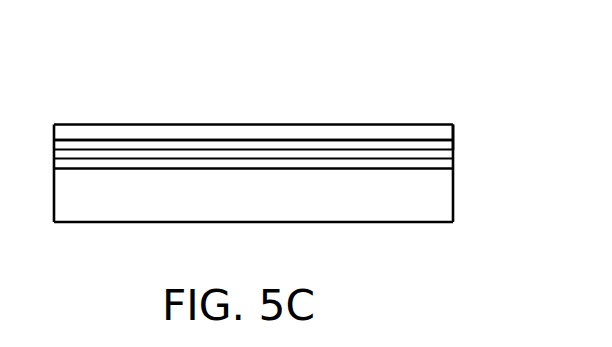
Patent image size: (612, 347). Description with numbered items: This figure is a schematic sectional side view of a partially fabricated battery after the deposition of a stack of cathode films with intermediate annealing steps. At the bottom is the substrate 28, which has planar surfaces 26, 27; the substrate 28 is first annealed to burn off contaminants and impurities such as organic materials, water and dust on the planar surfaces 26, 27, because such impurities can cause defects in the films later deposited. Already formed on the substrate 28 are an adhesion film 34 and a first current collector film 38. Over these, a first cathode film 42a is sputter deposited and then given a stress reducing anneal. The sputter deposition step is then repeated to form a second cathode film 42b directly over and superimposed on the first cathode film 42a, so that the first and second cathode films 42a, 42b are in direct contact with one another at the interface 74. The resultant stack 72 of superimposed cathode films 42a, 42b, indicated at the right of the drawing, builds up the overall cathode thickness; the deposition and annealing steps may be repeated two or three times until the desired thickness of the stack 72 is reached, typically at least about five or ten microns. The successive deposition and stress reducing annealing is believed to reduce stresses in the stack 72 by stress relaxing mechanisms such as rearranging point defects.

The planar surface 26 is at (104, 168).
The planar surface 27 is at (410, 222).
The substrate 28 is at (263, 216).
The adhesion film 34 is at (440, 158).
The first current collector film 38 is at (378, 149).
The first cathode film 42a is at (302, 140).
The second cathode film 42b is at (232, 124).
The stack 72 is at (457, 123).
The interface 74 is at (174, 140).